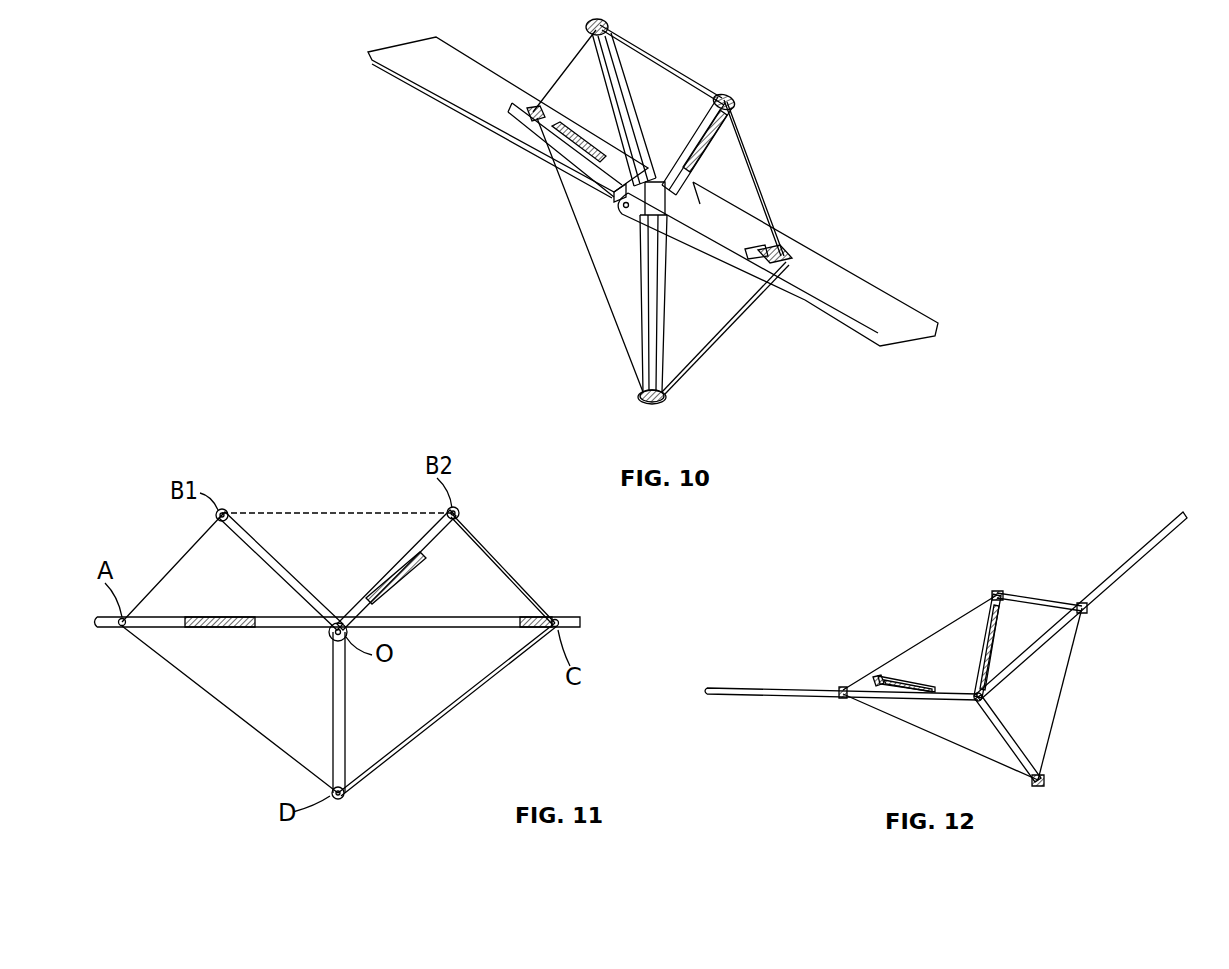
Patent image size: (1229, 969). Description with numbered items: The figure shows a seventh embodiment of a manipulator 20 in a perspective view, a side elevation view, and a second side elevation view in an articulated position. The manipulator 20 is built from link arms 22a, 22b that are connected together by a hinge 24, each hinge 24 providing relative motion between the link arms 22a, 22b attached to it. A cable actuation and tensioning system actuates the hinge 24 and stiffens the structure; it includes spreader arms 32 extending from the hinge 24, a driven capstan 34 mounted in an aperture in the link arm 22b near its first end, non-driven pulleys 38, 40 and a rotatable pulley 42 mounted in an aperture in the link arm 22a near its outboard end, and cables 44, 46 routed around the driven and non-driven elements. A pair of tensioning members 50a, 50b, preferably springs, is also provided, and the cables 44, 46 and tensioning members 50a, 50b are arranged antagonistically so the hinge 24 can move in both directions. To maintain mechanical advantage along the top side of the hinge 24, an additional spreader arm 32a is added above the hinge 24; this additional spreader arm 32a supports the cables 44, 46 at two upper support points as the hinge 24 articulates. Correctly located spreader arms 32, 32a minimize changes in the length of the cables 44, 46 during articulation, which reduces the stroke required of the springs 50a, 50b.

In FIG. 10, the manipulator 20 is at (830, 105).
In FIG. 10, the link arm 22a is at (464, 56).
In FIG. 11, the link arm 22a is at (150, 618).
In FIG. 12, the link arm 22a is at (785, 697).
In FIG. 10, the link arm 22b is at (852, 283).
In FIG. 11, the link arm 22b is at (450, 622).
In FIG. 12, the link arm 22b is at (1130, 560).
In FIG. 10, the hinge 24 is at (612, 216).
In FIG. 11, the hinge 24 is at (328, 647).
In FIG. 10, the spreader arm 32 is at (631, 99).
In FIG. 11, the spreader arm 32 is at (428, 548).
In FIG. 12, the spreader arm 32 is at (983, 637).
In FIG. 11, the additional spreader arm 32a is at (258, 562).
In FIG. 10, the capstan 34 is at (785, 252).
In FIG. 11, the capstan 34 is at (556, 618).
In FIG. 12, the capstan 34 is at (1086, 611).
In FIG. 10, the pulley 38 is at (660, 402).
In FIG. 11, the pulley 38 is at (348, 797).
In FIG. 12, the pulley 38 is at (1045, 784).
In FIG. 10, the pulley 40 is at (585, 20).
In FIG. 11, the pulley 40 is at (228, 510).
In FIG. 12, the pulley 40 is at (877, 678).
In FIG. 10, the rotatable pulley 42 is at (520, 108).
In FIG. 11, the rotatable pulley 42 is at (120, 630).
In FIG. 12, the rotatable pulley 42 is at (843, 688).
In FIG. 10, the cable 44 is at (712, 336).
In FIG. 10, the cable 46 is at (690, 366).
In FIG. 11, the tensioning member 50a is at (396, 583).
In FIG. 11, the tensioning member 50b is at (218, 628).